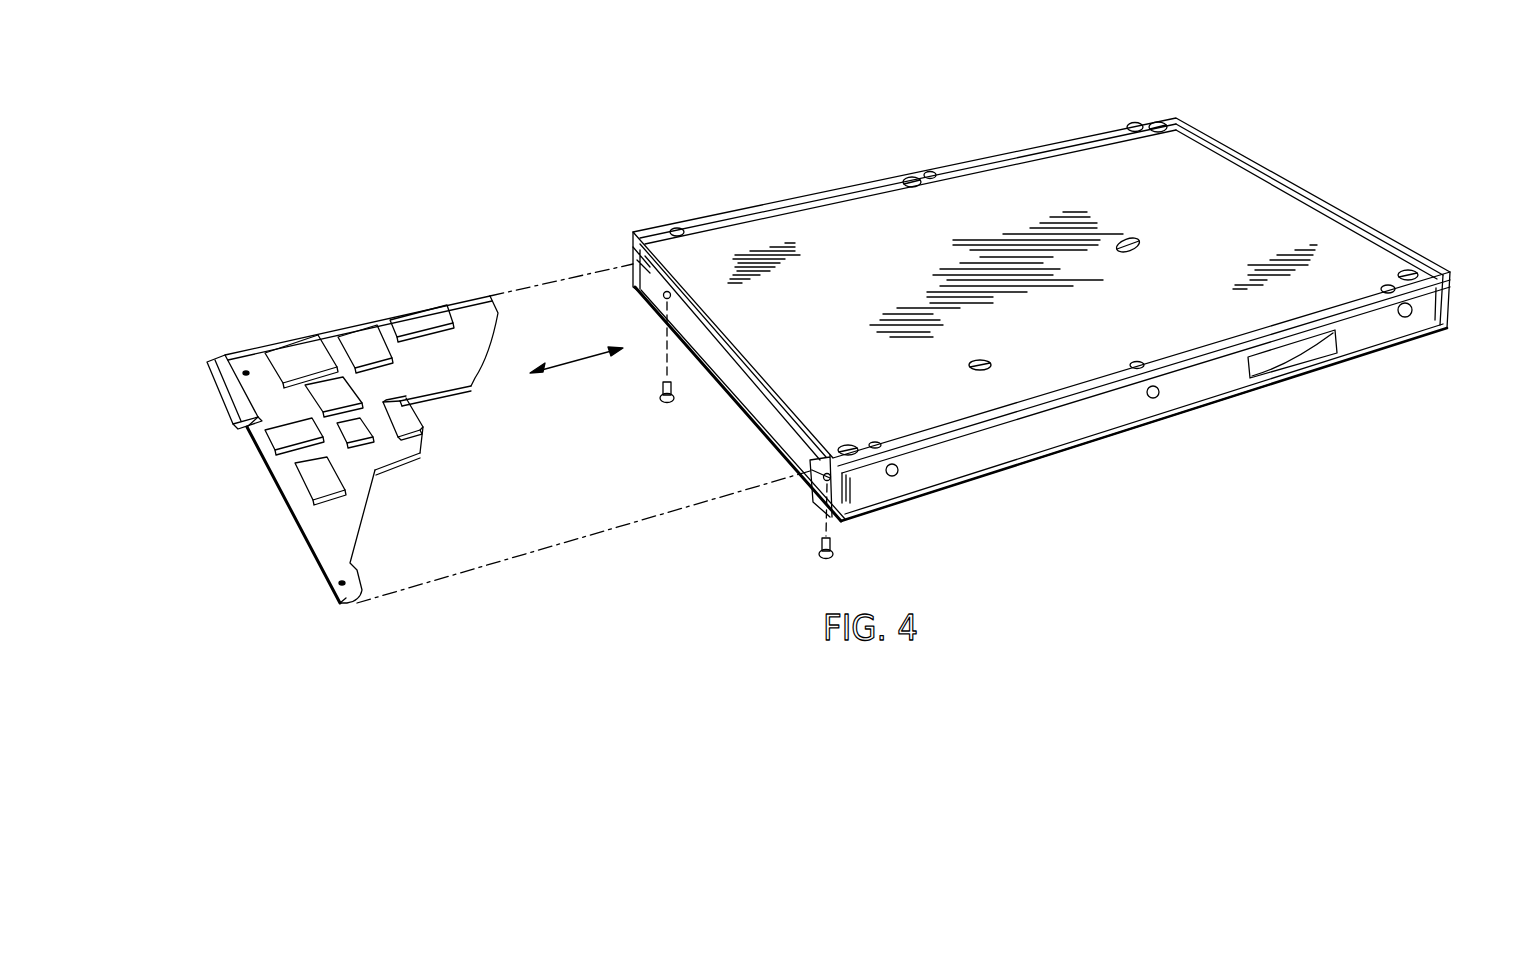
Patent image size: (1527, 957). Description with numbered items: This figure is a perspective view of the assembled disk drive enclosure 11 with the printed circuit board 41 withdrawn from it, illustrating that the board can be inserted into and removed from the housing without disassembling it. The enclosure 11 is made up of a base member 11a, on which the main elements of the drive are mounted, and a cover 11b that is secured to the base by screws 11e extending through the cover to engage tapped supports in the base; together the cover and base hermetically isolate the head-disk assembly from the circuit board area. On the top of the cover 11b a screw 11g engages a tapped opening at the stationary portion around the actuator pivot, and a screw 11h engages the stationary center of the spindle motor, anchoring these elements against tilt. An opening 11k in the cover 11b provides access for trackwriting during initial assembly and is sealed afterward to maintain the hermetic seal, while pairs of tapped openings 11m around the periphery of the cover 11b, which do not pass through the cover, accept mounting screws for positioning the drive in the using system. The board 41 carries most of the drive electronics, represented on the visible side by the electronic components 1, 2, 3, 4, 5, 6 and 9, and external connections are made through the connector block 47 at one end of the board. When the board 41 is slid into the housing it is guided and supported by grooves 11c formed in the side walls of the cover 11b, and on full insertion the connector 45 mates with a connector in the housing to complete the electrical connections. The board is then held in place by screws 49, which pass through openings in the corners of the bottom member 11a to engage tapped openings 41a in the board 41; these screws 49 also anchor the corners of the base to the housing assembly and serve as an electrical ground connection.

The enclosure 11 is at (1181, 275).
The base member 11a is at (1083, 447).
The cover 11b is at (1160, 397).
The grooves 11c is at (632, 263).
The screws 11e is at (930, 172).
The screw 11g is at (978, 360).
The screw 11h is at (1137, 243).
The opening 11k is at (1308, 375).
The tapped openings 11m is at (677, 228).
The printed circuit board 41 is at (447, 375).
The tapped openings 41a is at (248, 372).
The connector 45 is at (424, 418).
The connector block 47 is at (215, 358).
The screws 49 is at (660, 397).
The electronic component 1 is at (301, 361).
The electronic component 2 is at (365, 349).
The electronic component 3 is at (334, 397).
The electronic component 4 is at (297, 433).
The electronic component 5 is at (320, 481).
The electronic component 6 is at (417, 322).
The electronic component 9 is at (363, 432).